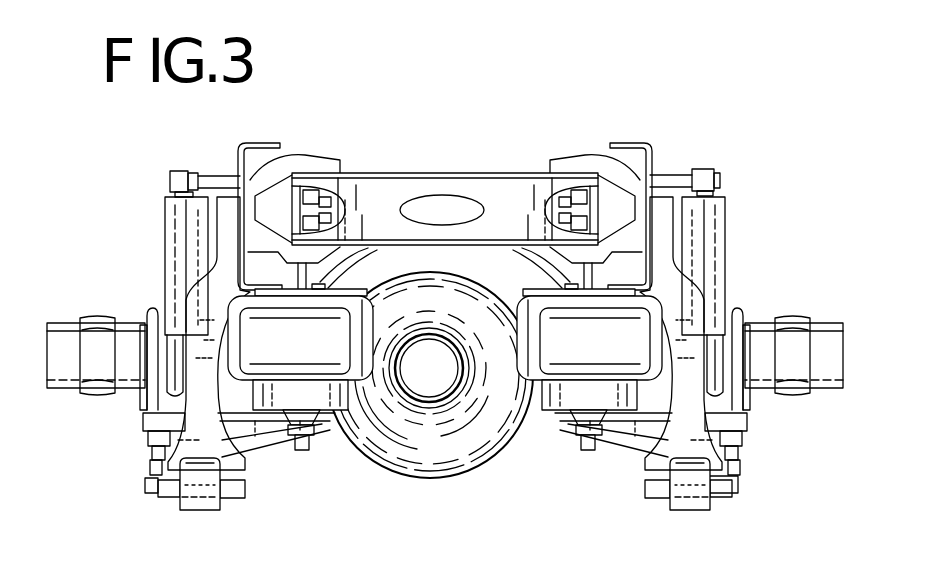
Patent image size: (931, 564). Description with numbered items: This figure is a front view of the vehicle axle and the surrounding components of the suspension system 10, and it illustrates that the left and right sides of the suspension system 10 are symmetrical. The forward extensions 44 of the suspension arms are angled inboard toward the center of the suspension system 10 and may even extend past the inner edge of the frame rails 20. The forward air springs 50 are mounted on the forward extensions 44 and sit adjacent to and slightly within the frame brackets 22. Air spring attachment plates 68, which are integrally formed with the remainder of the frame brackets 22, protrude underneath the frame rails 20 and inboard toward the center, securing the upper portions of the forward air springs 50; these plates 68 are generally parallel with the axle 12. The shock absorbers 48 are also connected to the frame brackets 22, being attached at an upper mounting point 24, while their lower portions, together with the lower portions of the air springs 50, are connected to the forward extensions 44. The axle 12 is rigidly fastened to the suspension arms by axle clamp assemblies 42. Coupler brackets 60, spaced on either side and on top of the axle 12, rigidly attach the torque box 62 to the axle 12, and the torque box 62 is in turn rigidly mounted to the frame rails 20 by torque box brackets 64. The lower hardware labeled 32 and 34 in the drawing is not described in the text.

The suspension system 10 is at (556, 146).
The axle 12 is at (822, 386).
The frame rails 20 is at (262, 143).
The frame brackets 22 is at (203, 312).
The upper mounting point 24 is at (212, 171).
The lower bushing block 32 is at (205, 505).
The mounting plate 34 is at (240, 490).
The axle clamp assemblies 42 is at (152, 312).
The forward extensions 44 is at (270, 452).
The shock absorbers 48 is at (178, 250).
The forward air springs 50 is at (322, 351).
The coupler brackets 60 is at (325, 270).
The torque box 62 is at (527, 208).
The torque box brackets 64 is at (305, 160).
The air spring attachment plates 68 is at (298, 288).